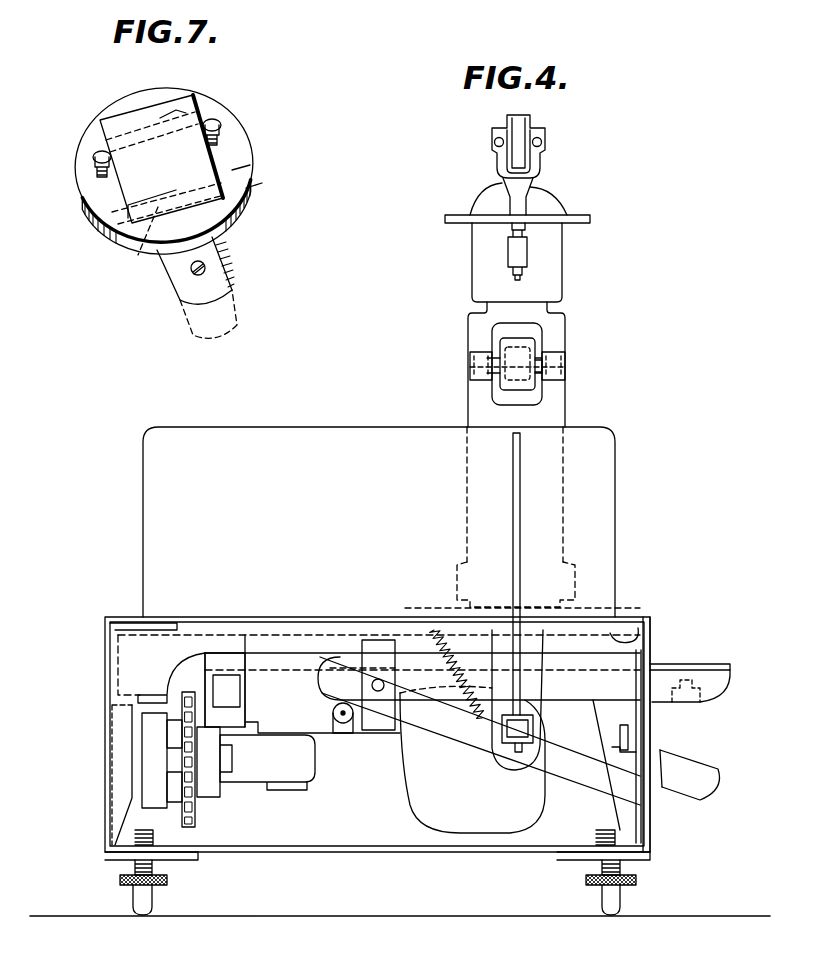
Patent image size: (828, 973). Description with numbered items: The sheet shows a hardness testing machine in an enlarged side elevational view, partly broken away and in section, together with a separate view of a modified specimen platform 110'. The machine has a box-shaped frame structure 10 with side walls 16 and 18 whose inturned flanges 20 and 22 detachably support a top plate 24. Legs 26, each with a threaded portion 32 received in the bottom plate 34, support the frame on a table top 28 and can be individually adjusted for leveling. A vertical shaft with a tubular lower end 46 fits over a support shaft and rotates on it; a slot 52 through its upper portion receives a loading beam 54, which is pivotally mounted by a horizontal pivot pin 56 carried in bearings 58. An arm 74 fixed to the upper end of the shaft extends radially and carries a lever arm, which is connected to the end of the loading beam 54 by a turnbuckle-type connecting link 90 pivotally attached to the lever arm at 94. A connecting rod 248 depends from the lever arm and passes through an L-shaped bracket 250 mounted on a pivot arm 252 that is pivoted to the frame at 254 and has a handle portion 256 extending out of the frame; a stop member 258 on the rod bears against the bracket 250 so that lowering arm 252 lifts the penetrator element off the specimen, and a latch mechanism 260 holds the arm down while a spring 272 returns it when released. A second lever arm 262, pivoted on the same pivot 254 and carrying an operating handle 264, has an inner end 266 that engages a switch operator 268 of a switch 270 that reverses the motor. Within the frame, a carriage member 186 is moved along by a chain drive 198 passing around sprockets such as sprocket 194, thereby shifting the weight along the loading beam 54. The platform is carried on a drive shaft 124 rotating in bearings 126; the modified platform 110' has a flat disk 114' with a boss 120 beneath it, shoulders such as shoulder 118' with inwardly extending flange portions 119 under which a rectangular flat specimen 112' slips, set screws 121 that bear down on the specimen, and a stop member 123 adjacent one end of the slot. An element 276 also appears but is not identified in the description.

In FIG. 4, the box-shaped frame structure 10 is at (101, 609).
In FIG. 4, the side wall 16 is at (645, 715).
In FIG. 4, the side wall 18 is at (112, 735).
In FIG. 4, the inturned flange 20 is at (640, 634).
In FIG. 4, the inturned flange 22 is at (110, 630).
In FIG. 4, the top wall or plate 24 is at (193, 617).
In FIG. 4, the legs 26 is at (152, 900).
In FIG. 4, the table top 28 is at (167, 879).
In FIG. 4, the threaded portion 32 is at (133, 863).
In FIG. 4, the bottom plate 34 is at (310, 852).
In FIG. 4, the tubular lower end 46 is at (567, 420).
In FIG. 4, the slot 52 is at (540, 336).
In FIG. 4, the loading beam 54 is at (528, 390).
In FIG. 4, the horizontal pivot pin 56 is at (566, 362).
In FIG. 4, the bearings 58 is at (478, 352).
In FIG. 4, the arm 74 is at (568, 211).
In FIG. 4, the connecting link or rod 90 is at (527, 199).
In FIG. 4, the pivotal connection 94 is at (544, 133).
In FIG. 7, the modified platform 110' is at (197, 166).
In FIG. 7, the rectangular flat specimen 112' is at (142, 229).
In FIG. 7, the flat disk 114' is at (268, 162).
In FIG. 7, the shoulder 118' is at (77, 210).
In FIG. 7, the inwardly extending flange portion 119 is at (248, 170).
In FIG. 7, the boss 120 is at (226, 238).
In FIG. 7, the set screws 121 is at (95, 150).
In FIG. 7, the stop member 123 is at (182, 106).
In FIG. 7, the drive shaft 124 is at (238, 291).
In FIG. 7, the bearings 126 is at (205, 266).
In FIG. 4, the carriage member 186 is at (166, 688).
In FIG. 4, the pulley or sprocket 194 is at (194, 825).
In FIG. 4, the chain drive 198 is at (186, 659).
In FIG. 4, the connecting rod 248 is at (520, 501).
In FIG. 4, the L-shaped bracket 250 is at (490, 742).
In FIG. 4, the pivot arm 252 is at (577, 768).
In FIG. 4, the pivot 254 is at (380, 691).
In FIG. 4, the handle portion 256 is at (699, 768).
In FIG. 4, the stop member 258 is at (502, 733).
In FIG. 4, the latch mechanism 260 is at (629, 737).
In FIG. 4, the second lever arm 262 is at (652, 668).
In FIG. 4, the operating handle 264 is at (710, 664).
In FIG. 4, the inner end 266 is at (318, 681).
In FIG. 4, the switch operator 268 is at (312, 715).
In FIG. 4, the switch 270 is at (315, 758).
In FIG. 4, the spring 272 is at (457, 633).
In FIG. 4, the cover 276 is at (126, 465).